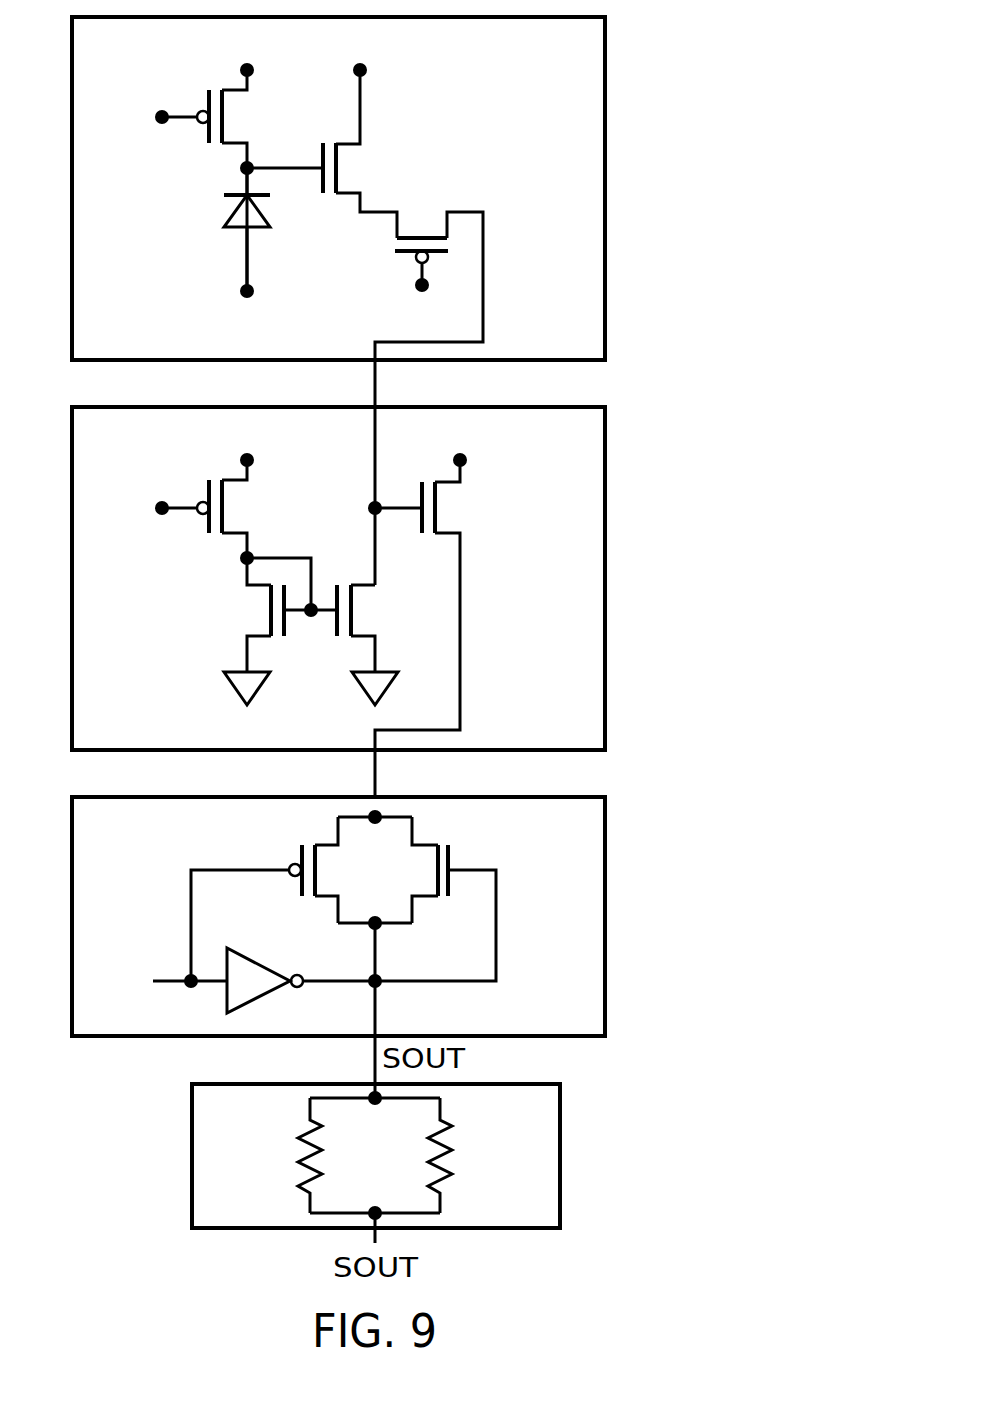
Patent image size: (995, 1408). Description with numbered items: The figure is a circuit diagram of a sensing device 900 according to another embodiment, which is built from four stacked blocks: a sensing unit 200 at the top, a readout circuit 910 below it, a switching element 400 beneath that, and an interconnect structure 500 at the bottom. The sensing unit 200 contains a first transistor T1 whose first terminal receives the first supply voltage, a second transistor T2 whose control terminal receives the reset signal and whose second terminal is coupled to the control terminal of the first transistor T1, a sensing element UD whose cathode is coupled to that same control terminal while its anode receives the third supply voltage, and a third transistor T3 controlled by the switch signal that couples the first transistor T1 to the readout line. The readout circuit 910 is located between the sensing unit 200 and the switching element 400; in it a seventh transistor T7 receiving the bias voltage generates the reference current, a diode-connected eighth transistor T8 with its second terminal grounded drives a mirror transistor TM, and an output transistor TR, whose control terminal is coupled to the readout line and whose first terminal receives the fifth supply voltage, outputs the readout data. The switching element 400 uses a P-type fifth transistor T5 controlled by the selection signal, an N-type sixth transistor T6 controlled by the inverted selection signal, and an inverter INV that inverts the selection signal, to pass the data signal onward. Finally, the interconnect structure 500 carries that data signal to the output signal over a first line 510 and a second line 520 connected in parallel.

The sensing unit 200 is at (605, 191).
The readout circuit 910 is at (605, 581).
The switching element 400 is at (605, 916).
The interconnect structure 500 is at (560, 1156).
The first line 510 is at (298, 1165).
The second line 520 is at (453, 1151).
The sensing device 900 is at (751, 1283).
The first transistor T1 is at (352, 170).
The second transistor T2 is at (240, 117).
The third transistor T3 is at (397, 228).
The fifth transistor T5 is at (327, 843).
The sixth transistor T6 is at (421, 843).
The seventh transistor T7 is at (240, 508).
The eighth transistor T8 is at (258, 612).
The output transistor TR is at (455, 510).
The mirror transistor TM is at (370, 612).
The sensing element UD is at (233, 206).
The inverter INV is at (256, 960).